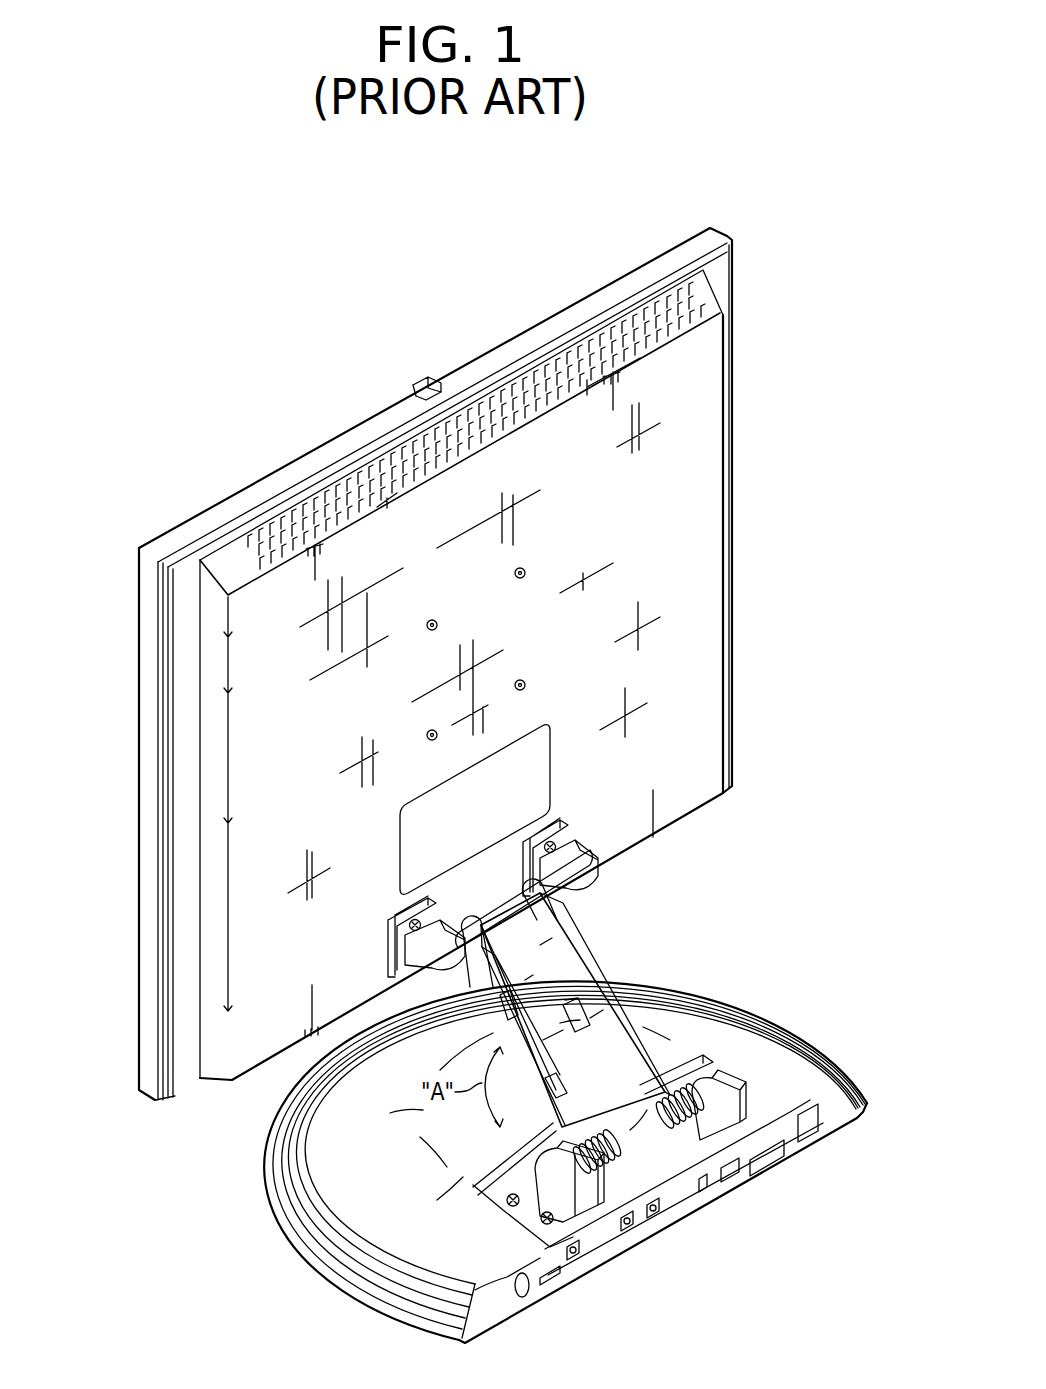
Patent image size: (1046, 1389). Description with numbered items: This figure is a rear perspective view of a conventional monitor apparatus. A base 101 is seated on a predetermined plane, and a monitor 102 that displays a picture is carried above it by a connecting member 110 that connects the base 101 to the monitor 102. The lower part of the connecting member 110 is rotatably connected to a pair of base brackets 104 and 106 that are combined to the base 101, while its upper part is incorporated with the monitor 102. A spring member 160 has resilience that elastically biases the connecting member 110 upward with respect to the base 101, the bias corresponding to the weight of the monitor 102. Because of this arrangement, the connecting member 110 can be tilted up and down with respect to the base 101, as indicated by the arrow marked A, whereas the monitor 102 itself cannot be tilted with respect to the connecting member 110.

The base 101 is at (343, 1294).
The monitor 102 is at (137, 941).
The base bracket 104 is at (722, 1125).
The base bracket 106 is at (583, 1200).
The connecting member 110 is at (607, 967).
The spring member 160 is at (690, 1150).